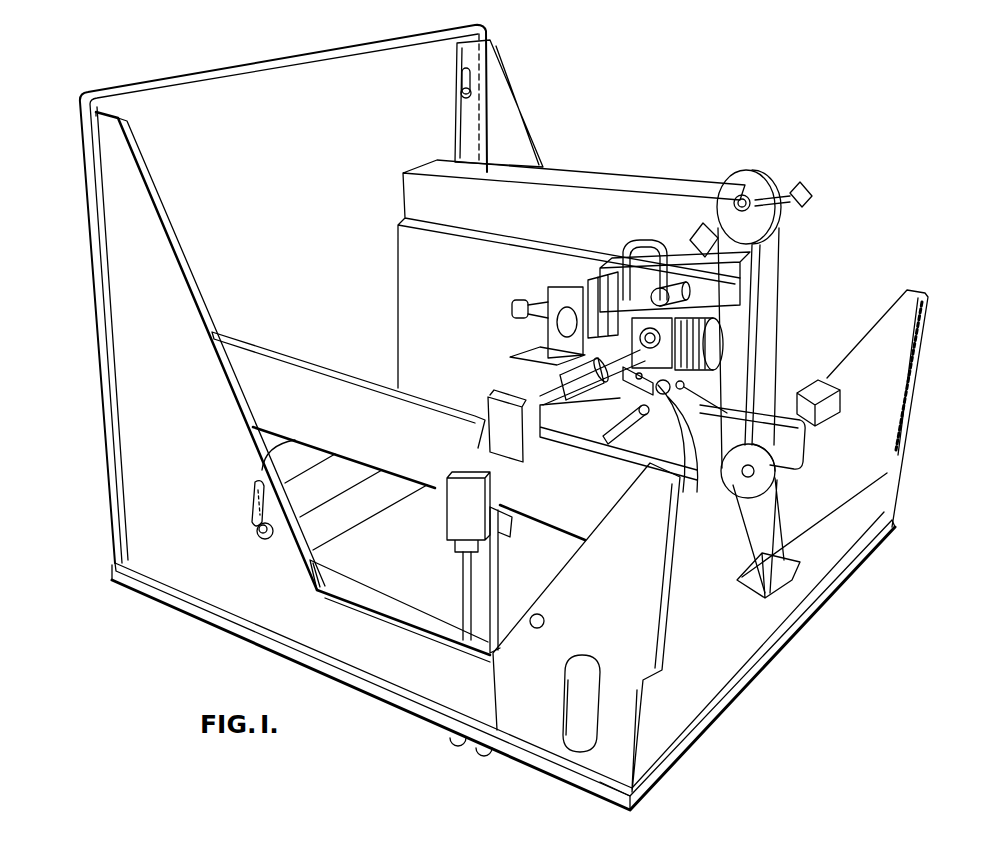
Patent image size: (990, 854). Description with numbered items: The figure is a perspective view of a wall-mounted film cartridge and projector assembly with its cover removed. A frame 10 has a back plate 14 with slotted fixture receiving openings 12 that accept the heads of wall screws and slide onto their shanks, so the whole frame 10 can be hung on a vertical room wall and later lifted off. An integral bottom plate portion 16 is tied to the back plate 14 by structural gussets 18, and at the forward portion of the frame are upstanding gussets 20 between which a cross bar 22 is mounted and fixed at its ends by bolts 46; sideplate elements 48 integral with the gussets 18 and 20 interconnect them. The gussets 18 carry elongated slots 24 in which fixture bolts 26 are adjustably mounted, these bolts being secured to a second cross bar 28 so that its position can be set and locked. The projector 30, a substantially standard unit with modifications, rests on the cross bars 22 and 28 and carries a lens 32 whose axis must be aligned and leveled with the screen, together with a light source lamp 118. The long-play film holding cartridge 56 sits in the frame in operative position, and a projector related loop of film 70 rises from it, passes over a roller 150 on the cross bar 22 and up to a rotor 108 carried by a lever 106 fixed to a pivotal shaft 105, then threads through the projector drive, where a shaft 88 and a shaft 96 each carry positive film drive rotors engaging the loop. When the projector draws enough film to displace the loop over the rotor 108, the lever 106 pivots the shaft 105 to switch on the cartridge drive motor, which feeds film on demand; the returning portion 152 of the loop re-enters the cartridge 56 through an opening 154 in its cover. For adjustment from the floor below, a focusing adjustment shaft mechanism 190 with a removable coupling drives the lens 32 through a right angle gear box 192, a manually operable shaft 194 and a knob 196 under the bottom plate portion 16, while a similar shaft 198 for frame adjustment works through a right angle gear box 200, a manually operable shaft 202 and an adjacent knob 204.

The frame 10 is at (164, 420).
The fixture receiving openings 12 is at (470, 88).
The back plate 14 is at (104, 282).
The bottom plate portion 16 is at (258, 630).
The structural gussets 18 is at (552, 198).
The upstanding gussets 20 is at (588, 623).
The cross bar 22 is at (819, 424).
The elongated slots 24 is at (255, 486).
The fixture bolts 26 is at (252, 529).
The cross bar 28 is at (338, 526).
The projector 30 is at (681, 238).
The lens 32 is at (742, 352).
The bolts 46 is at (537, 629).
The sideplate elements 48 is at (393, 646).
The film holding cartridge 56 is at (742, 640).
The projector related loop of film 70 is at (630, 240).
The shaft 88 is at (700, 285).
The shaft 96 is at (705, 472).
The pivotal shaft 105 is at (710, 226).
The lever 106 is at (796, 219).
The rotor 108 is at (748, 190).
The projector light source lamp 118 is at (514, 308).
The roller 150 is at (773, 476).
The portion of the projector related loop of film 152 is at (781, 536).
The opening 154 is at (745, 590).
The focusing adjustment shaft mechanism 190 is at (590, 372).
The right angle gear box 192 is at (513, 442).
The manually operable shaft 194 is at (500, 594).
The manually operable knob 196 is at (488, 746).
The shaft 198 is at (645, 455).
The right angle gear box 200 is at (477, 531).
The manually operable shaft 202 is at (464, 588).
The knob 204 is at (458, 736).